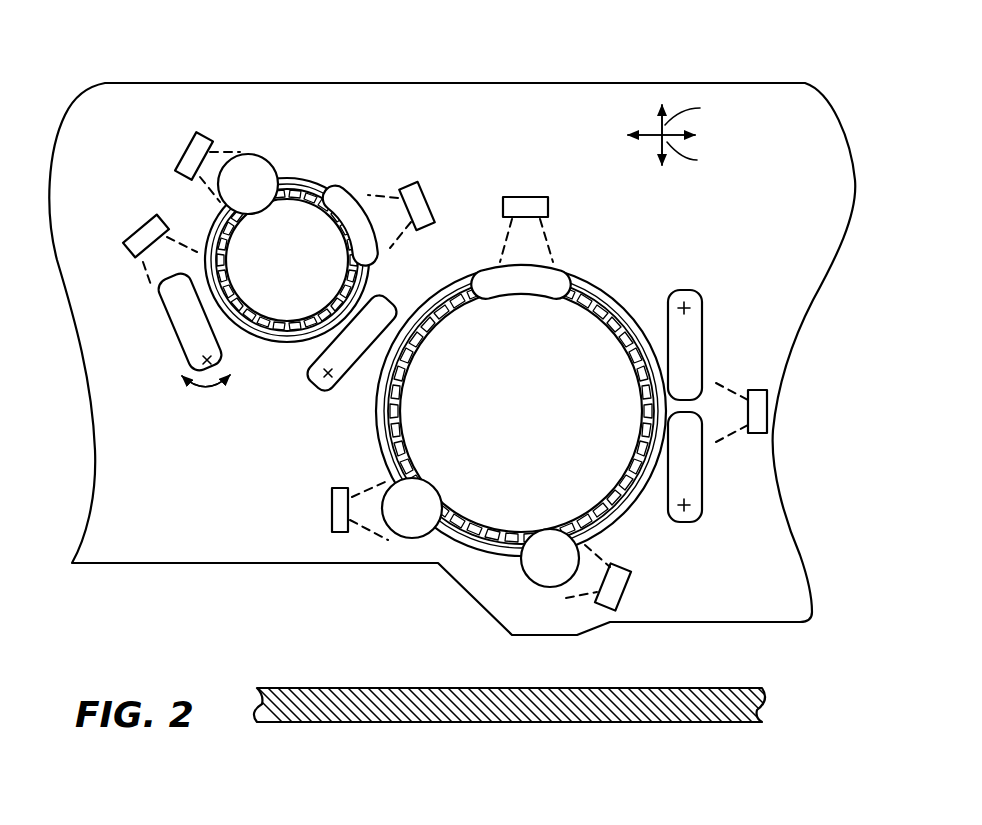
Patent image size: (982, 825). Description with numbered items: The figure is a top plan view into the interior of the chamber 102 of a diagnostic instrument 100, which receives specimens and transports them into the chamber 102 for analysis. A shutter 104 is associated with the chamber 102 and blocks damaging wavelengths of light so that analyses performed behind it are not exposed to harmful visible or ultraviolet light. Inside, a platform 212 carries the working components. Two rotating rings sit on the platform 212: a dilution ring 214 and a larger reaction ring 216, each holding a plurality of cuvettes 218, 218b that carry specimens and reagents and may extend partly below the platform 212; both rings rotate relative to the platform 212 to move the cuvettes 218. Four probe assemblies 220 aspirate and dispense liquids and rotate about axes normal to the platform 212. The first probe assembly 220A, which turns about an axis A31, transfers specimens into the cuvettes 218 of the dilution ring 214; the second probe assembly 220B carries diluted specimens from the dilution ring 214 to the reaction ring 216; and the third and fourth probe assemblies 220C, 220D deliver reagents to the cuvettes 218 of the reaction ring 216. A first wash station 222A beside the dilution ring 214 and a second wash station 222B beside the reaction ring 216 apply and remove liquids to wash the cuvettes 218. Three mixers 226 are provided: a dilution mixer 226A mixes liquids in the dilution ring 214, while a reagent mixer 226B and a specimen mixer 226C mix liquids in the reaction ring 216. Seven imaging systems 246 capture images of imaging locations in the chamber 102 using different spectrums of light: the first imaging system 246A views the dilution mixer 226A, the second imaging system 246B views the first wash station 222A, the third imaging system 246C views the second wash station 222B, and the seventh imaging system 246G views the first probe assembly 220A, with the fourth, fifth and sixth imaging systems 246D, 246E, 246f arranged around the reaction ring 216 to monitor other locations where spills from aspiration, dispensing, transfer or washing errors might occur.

The diagnostic instrument 100 is at (632, 66).
The chamber 102 is at (437, 81).
The shutter 104 is at (313, 688).
The platform 212 is at (797, 149).
The dilution ring 214 is at (318, 254).
The reaction ring 216 is at (488, 389).
The cuvettes 218 is at (293, 342).
The chain / belt of second ring 218b is at (592, 296).
The probe assemblies 220 is at (446, 392).
The first probe assembly 220A is at (175, 333).
The second probe assembly 220B is at (318, 392).
The third probe assembly 220C is at (703, 345).
The fourth probe assembly 220D is at (703, 465).
The first wash station 222A is at (353, 193).
The second wash station 222B is at (560, 271).
The mixers 226 is at (438, 399).
The dilution mixer 226A is at (283, 141).
The reagent mixer 226B is at (403, 536).
The specimen mixer 226C is at (535, 585).
The imaging systems 246 is at (469, 356).
The first imaging system 246A is at (185, 150).
The second imaging system 246B is at (430, 200).
The third imaging system 246C is at (548, 206).
The fourth imaging system 246D is at (768, 412).
The fifth imaging system 246E is at (330, 510).
The sixth imaging system 246f is at (625, 590).
The seventh imaging system 246G is at (140, 222).
The axis A31 is at (196, 360).